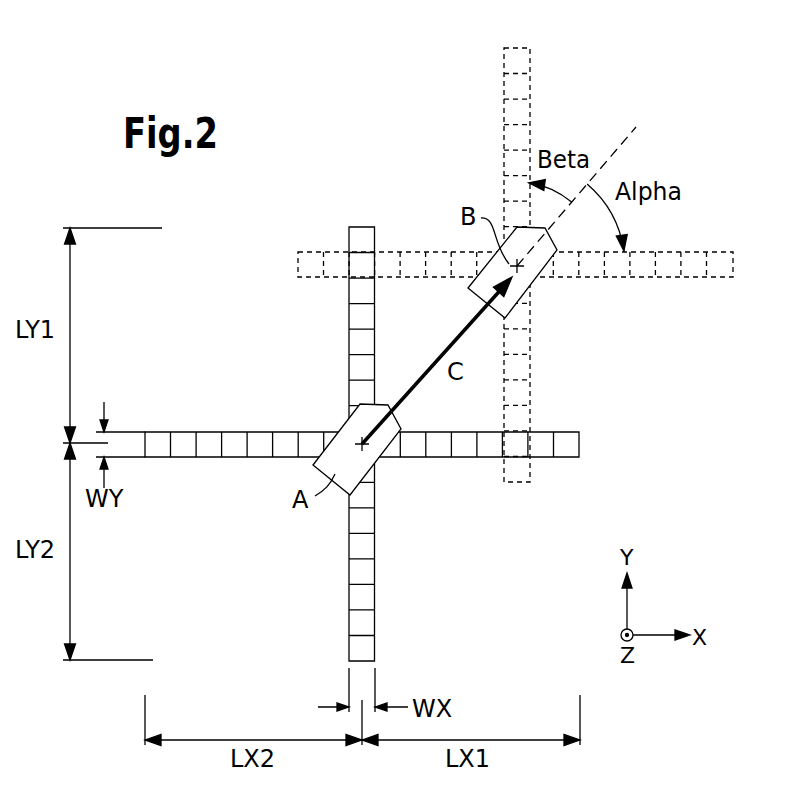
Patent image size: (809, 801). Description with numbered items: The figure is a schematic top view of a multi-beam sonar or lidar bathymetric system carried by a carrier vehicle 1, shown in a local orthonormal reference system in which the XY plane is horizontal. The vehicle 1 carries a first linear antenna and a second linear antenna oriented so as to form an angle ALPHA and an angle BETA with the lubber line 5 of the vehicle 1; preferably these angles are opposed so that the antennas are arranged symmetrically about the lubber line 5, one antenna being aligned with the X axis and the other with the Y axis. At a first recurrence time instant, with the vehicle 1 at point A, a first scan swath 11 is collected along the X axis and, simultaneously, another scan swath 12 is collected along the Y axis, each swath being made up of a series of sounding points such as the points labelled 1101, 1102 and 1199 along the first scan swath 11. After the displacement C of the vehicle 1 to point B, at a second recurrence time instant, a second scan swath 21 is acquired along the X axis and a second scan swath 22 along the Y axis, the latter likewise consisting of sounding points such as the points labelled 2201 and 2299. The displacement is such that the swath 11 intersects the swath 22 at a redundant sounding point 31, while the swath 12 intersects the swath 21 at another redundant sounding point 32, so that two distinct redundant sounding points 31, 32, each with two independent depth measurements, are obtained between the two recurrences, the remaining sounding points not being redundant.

The carrier vehicle 1 is at (343, 430).
The lubber line 5 is at (637, 132).
The first scan swath 11 is at (580, 440).
The scan swath along Y axis 12 is at (355, 227).
The second scan swath along X axis 21 is at (298, 265).
The second scan swath 22 is at (530, 63).
The redundant sounding point 31 is at (518, 440).
The redundant sounding point 32 is at (366, 265).
The end cell of track 11 1101 is at (566, 450).
The cell of track 11 1102 is at (543, 440).
The first cell of track 11 1199 is at (157, 440).
The cells of track 22 2201 is at (513, 65).
The end cell of track 22 2299 is at (512, 468).